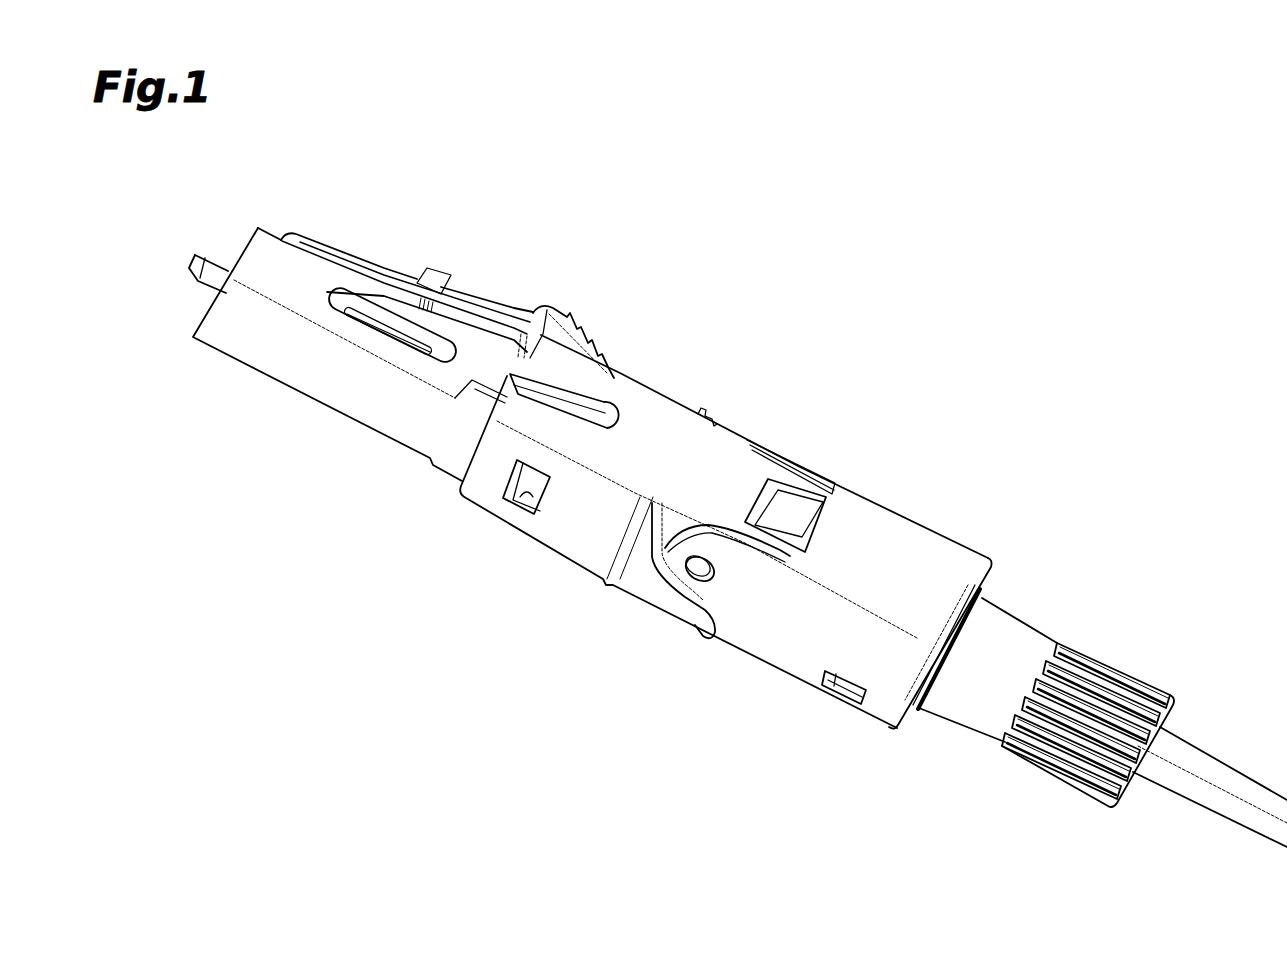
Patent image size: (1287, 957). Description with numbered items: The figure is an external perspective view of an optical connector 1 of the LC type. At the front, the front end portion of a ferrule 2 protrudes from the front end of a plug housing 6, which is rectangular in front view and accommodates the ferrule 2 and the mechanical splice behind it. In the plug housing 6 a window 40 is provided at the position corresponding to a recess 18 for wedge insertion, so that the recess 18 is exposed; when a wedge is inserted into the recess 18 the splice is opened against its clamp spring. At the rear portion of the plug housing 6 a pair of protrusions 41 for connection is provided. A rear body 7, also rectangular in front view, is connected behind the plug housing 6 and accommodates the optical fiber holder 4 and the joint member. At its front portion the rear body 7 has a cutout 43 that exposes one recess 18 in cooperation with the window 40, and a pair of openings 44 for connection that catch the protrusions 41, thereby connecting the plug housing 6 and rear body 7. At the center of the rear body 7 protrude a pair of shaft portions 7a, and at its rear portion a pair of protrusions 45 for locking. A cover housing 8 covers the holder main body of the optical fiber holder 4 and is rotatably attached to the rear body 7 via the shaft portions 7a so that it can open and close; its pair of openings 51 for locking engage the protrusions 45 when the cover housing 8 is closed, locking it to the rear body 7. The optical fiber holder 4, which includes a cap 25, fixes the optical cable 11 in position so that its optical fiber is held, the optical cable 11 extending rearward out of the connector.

The optical connector 1 is at (892, 262).
The ferrule 2 is at (219, 254).
The optical fiber holder 4 is at (1036, 616).
The plug housing 6 is at (315, 272).
The rear body 7 is at (677, 420).
The shaft portion 7a is at (698, 580).
The cover housing 8 is at (892, 523).
The optical cable 11 is at (1233, 780).
The recess for wedge insertion 18 is at (405, 347).
The cap 25 is at (963, 713).
The window 40 is at (393, 328).
The protrusion for connection 41 is at (513, 477).
The cutout 43 is at (608, 407).
The opening for connection 44 is at (523, 497).
The protrusion for locking 45 is at (837, 697).
The opening for locking 51 is at (830, 687).